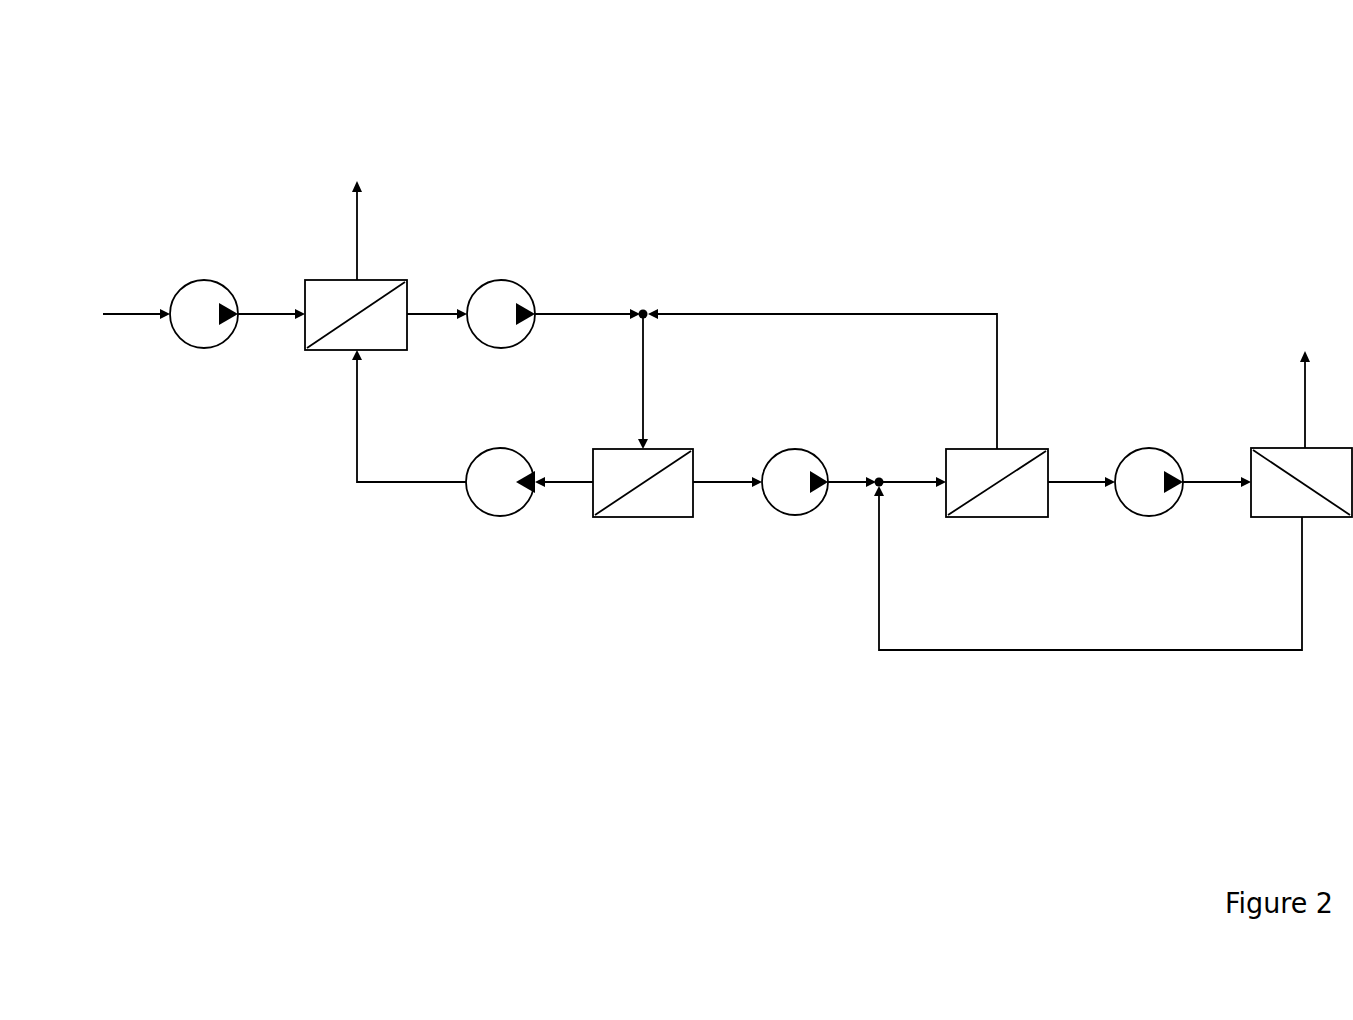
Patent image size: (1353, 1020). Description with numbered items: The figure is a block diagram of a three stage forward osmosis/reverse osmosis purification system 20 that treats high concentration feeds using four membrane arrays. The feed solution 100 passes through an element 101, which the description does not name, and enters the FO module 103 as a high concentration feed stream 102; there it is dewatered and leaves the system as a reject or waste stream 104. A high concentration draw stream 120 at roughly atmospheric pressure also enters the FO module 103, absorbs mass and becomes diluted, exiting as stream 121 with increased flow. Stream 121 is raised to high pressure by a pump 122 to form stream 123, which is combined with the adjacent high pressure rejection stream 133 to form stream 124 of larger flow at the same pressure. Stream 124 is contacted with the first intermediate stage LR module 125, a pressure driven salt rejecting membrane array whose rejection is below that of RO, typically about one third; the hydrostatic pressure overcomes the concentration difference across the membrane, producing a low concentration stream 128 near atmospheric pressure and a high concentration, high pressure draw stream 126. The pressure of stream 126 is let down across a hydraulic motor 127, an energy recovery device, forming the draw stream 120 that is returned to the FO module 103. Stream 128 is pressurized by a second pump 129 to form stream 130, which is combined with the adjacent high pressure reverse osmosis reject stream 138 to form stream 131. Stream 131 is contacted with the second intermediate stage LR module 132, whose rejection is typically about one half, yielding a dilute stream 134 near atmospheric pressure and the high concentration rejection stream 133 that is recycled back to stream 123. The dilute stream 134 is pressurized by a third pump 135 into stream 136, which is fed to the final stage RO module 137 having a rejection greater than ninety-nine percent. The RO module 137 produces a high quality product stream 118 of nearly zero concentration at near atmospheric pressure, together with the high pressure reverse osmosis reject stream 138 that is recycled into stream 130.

The three stage FO RO system 20 is at (1213, 71).
The feed solution 100 is at (130, 304).
The feed pump 101 is at (206, 271).
The high concentration feed stream 102 is at (268, 304).
The FO module 103 is at (328, 277).
The reject or waste stream 104 is at (360, 213).
The high concentration draw stream 120 is at (350, 458).
The diluted draw stream 121 is at (430, 308).
The pump 122 is at (501, 275).
The pressurized draw stream 123 is at (575, 307).
The combined stream 124 is at (654, 358).
The LR module 125 is at (610, 443).
The high concentration draw stream 126 is at (565, 488).
The hydraulic motor 127 is at (500, 443).
The low concentration stream 128 is at (727, 488).
The second pump 129 is at (795, 443).
The pressurized stream 130 is at (860, 474).
The combined stream 131 is at (910, 474).
The LR module 132 is at (1027, 443).
The high concentration rejection stream 133 is at (1012, 381).
The dilute stream 134 is at (1077, 475).
The third pump 135 is at (1148, 525).
The pressurized dilute stream 136 is at (1212, 475).
The RO module 137 is at (1267, 443).
The high quality product stream 118 is at (1317, 388).
The reverse osmosis reject stream 138 is at (1100, 645).